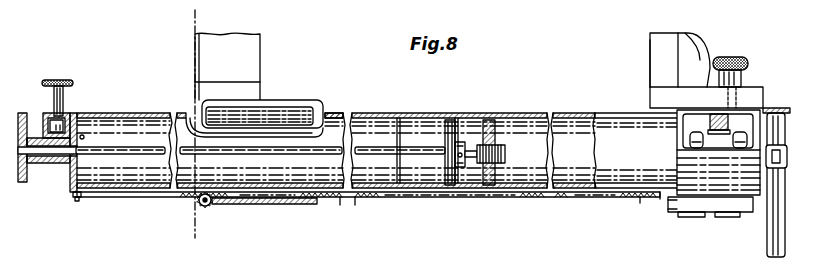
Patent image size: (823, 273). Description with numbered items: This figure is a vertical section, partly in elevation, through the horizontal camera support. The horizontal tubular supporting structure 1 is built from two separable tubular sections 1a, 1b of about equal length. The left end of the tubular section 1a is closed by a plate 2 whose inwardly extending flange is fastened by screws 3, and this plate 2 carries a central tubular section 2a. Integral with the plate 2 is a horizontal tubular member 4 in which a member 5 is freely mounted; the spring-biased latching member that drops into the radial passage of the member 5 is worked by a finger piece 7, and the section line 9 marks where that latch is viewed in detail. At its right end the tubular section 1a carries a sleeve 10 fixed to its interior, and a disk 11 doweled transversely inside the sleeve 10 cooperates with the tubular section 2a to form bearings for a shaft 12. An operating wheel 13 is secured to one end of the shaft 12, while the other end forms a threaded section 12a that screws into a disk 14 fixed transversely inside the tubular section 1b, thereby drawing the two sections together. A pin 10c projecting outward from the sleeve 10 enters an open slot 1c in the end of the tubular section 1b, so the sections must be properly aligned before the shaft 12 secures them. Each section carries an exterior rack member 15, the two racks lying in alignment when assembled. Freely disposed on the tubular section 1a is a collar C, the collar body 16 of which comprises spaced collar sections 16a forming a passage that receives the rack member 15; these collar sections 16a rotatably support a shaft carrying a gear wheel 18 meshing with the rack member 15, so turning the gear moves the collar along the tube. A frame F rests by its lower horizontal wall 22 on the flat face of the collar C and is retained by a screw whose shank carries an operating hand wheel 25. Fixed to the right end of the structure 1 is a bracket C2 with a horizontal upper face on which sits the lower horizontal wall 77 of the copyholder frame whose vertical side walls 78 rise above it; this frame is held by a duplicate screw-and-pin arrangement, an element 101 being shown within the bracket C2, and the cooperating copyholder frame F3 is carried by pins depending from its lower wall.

The horizontal tubular supporting structure 1 is at (545, 104).
The tubular section 1a is at (331, 115).
The tubular section 1b is at (585, 115).
The open slot 1c is at (458, 124).
The plate 2 is at (70, 170).
The central tubular section 2a is at (77, 158).
The screws 3 is at (84, 138).
The horizontal tubular member 4 is at (45, 122).
The member 5 is at (60, 128).
The operating finger piece 7 is at (70, 92).
The section line / handle rod 9 is at (776, 238).
The sleeve 10 is at (215, 22).
The pin 10c is at (452, 118).
The disk 11 is at (451, 165).
The shaft 12 is at (133, 146).
The threaded section 12a is at (505, 153).
The operating wheel 13 is at (27, 115).
The disk 14 is at (492, 125).
The rack member 15 is at (343, 200).
The collar 16 is at (322, 110).
The collar sections 16a is at (215, 208).
The gear wheel 18 is at (213, 205).
The lower horizontal wall 22 is at (248, 94).
The operating hand wheel 25 is at (744, 62).
The lower horizontal wall 77 is at (753, 92).
The vertical side walls 78 is at (700, 56).
The block 101 is at (720, 118).
The frame F is at (262, 58).
The copyholder frame F3 is at (650, 60).
The collar C is at (272, 116).
The bracket C2 is at (722, 182).